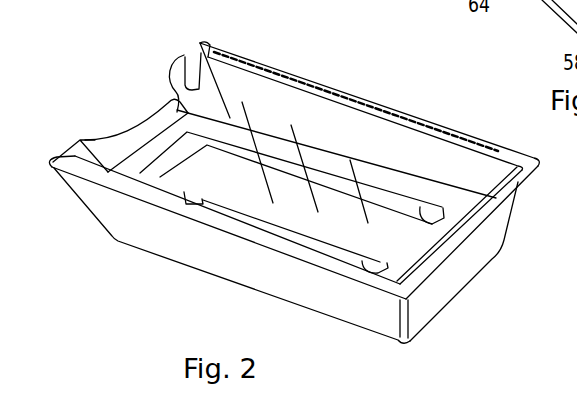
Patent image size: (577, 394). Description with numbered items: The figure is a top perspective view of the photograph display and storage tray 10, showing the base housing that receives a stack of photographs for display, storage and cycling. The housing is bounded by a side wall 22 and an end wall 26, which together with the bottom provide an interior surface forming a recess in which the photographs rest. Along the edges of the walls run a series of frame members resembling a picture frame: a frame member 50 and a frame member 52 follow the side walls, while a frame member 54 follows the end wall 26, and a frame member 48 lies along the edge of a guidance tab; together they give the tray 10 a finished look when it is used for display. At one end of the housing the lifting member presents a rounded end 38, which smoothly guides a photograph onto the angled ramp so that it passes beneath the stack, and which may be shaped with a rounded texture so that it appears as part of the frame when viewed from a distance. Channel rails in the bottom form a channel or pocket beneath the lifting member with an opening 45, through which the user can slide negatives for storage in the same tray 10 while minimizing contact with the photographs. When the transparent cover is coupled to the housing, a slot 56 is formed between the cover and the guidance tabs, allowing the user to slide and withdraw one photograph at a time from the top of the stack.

The photograph display and storage tray 10 is at (321, 60).
The side wall 22 is at (345, 305).
The end wall 26 is at (447, 285).
The rounded end 38 is at (150, 123).
The opening 45 is at (165, 160).
The frame member 48 is at (204, 43).
The frame member 50 is at (260, 238).
The frame member 52 is at (378, 107).
The frame member 54 is at (480, 213).
The slot 56 is at (182, 58).